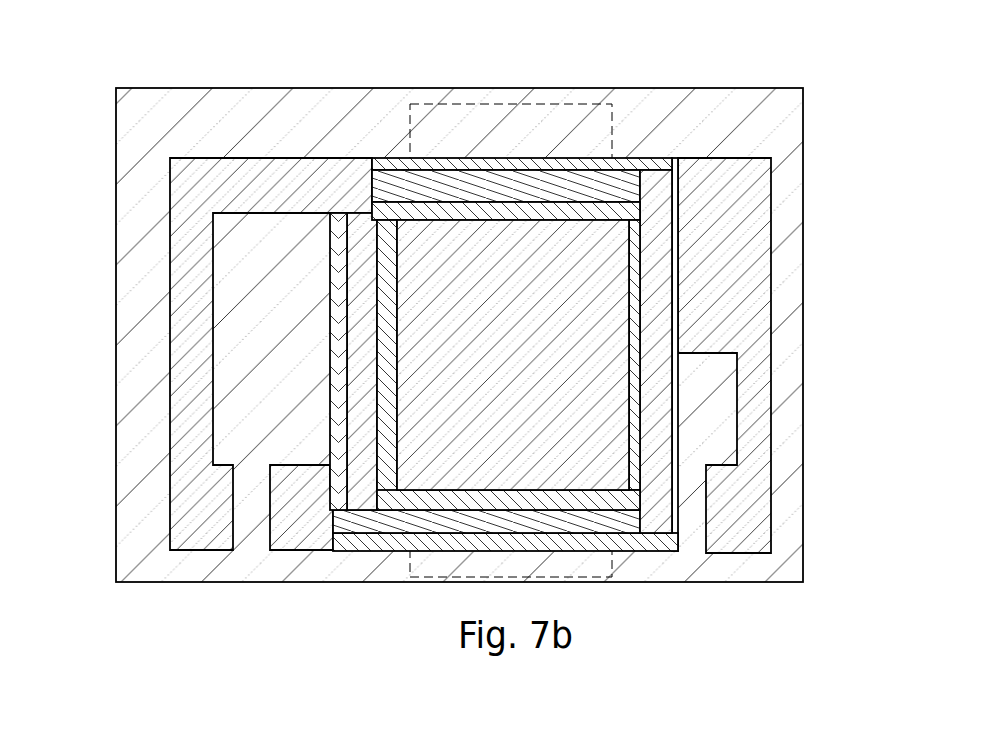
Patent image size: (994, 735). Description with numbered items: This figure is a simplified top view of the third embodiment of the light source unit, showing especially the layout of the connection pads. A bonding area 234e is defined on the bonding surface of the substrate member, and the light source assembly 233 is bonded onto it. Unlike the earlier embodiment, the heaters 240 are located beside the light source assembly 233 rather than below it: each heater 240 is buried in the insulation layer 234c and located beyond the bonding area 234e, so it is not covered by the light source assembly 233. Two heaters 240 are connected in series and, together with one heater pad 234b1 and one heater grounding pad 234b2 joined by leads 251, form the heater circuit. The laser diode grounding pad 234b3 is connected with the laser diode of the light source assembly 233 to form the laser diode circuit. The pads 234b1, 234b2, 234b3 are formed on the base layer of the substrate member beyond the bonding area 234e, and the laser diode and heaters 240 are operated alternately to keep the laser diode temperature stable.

The light source assembly 233 is at (600, 105).
The heater pad 234b1 is at (303, 530).
The heater grounding pad 234b2 is at (205, 520).
The laser diode grounding pad 234b3 is at (733, 527).
The insulation layer 234c is at (402, 162).
The bonding area 234e is at (537, 363).
The heater 240 is at (652, 300).
The lead 251 is at (397, 183).